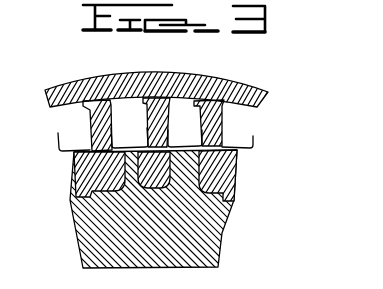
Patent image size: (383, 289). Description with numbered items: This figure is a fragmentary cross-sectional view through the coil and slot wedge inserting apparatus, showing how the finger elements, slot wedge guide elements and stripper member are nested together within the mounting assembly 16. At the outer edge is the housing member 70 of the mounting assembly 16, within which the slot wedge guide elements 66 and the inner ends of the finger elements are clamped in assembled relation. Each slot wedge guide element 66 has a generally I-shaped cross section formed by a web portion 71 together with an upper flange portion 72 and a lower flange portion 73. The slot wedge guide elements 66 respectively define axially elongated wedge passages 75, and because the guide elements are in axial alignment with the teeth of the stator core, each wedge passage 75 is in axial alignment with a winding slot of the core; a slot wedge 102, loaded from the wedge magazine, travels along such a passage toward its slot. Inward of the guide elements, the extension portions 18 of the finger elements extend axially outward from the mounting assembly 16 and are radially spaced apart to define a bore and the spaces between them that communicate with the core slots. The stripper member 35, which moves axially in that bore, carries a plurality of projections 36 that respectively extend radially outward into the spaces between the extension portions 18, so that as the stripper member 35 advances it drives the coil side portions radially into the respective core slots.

The mounting assembly 16 is at (253, 73).
The housing member 70 is at (268, 97).
The upper flange portion 72 is at (100, 82).
The wedge passage 75 is at (186, 108).
The web portion 71 is at (90, 117).
The slot wedge guide element 66 is at (223, 118).
The slot wedge 102 is at (253, 143).
The projection 36 is at (238, 172).
The extension portion 18 is at (235, 184).
The lower flange portion 73 is at (80, 172).
The stripper member 35 is at (220, 235).